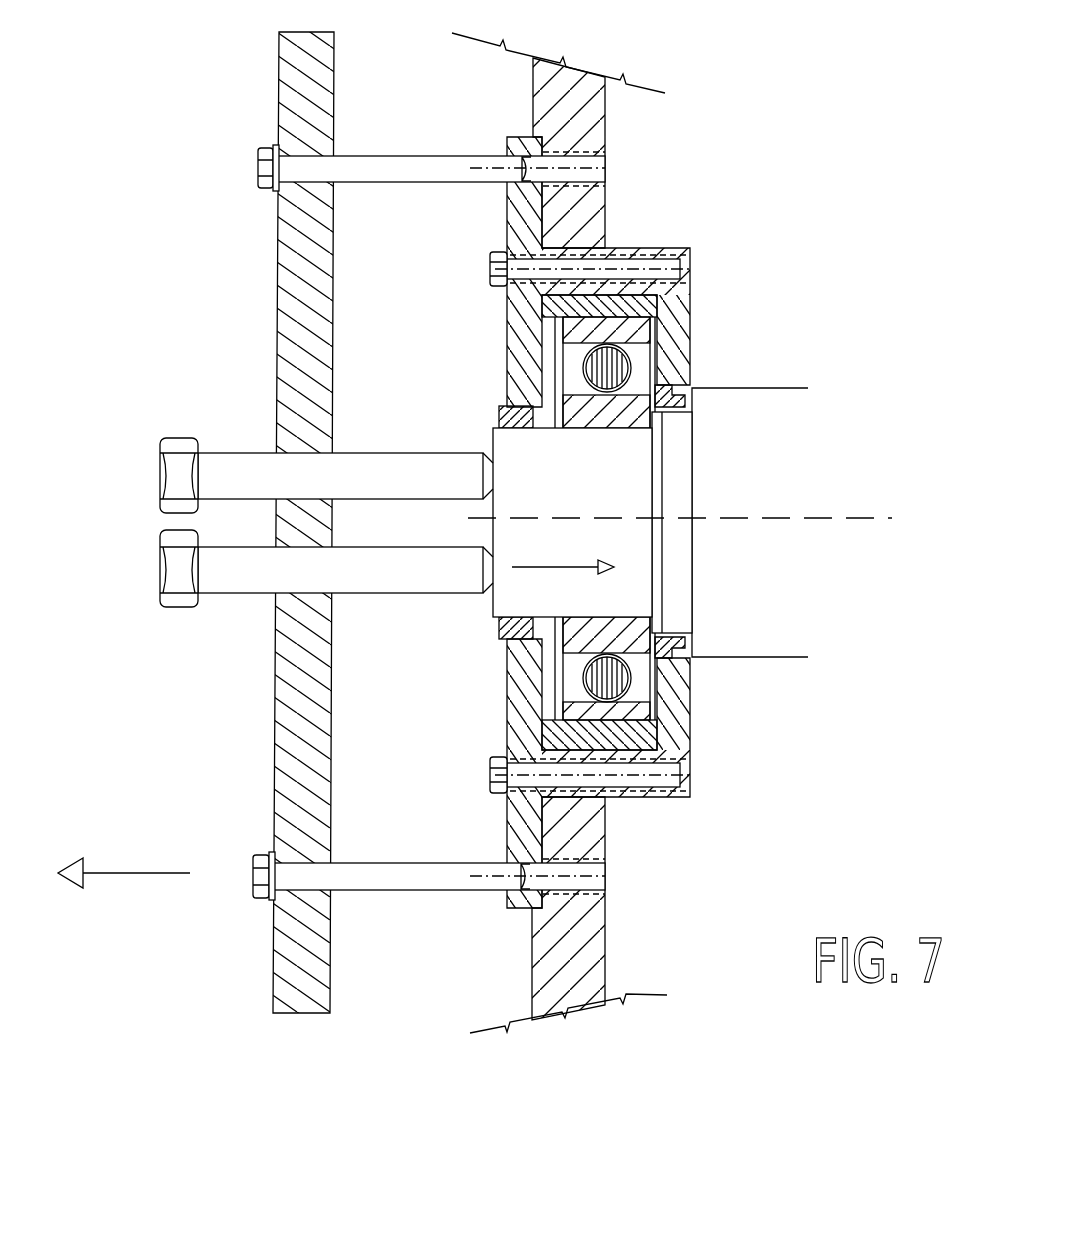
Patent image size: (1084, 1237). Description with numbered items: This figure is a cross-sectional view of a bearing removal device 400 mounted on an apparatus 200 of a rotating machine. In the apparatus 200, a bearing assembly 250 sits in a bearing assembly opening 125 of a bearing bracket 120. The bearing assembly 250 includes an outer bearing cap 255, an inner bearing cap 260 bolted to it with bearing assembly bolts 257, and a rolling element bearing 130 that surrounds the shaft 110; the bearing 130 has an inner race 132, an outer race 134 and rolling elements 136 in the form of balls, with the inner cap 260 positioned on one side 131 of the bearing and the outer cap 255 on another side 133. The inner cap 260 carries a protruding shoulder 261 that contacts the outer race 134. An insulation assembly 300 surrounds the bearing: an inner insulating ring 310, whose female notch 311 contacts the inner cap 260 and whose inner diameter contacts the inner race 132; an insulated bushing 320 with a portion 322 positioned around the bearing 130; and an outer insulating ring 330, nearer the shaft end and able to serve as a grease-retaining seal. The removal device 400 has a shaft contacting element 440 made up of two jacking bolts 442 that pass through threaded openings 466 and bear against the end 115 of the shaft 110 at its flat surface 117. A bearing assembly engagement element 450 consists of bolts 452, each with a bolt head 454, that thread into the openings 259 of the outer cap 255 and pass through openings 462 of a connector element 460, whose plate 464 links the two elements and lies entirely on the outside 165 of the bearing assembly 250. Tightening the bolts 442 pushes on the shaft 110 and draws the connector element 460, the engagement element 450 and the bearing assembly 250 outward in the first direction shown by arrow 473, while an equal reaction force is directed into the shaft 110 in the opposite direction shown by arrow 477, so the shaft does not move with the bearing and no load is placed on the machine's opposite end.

The shaft 110 is at (750, 522).
The end of shaft 115 is at (476, 616).
The flat surface 117 is at (490, 440).
The bearing bracket 120 is at (607, 100).
The bearing assembly opening 125 is at (583, 248).
The bearing 130 is at (728, 508).
The one side of bearing 131 is at (668, 374).
The inner race 132 is at (640, 423).
The another side of bearing 133 is at (546, 350).
The outer race 134 is at (660, 334).
The rolling elements 136 is at (605, 393).
The outside of bearing assembly 165 is at (459, 384).
The apparatus 200 is at (774, 203).
The bearing assembly 250 is at (483, 236).
The outer bearing cap 255 is at (505, 302).
The bearing assembly bolts 257 is at (487, 266).
The openings 259 is at (565, 140).
The inner bearing cap 260 is at (690, 290).
The protruding shoulder 261 is at (690, 322).
The insulation assembly 300 is at (530, 688).
The inner insulating ring 310 is at (678, 648).
The female notch 311 is at (680, 384).
The insulated bushing 320 is at (628, 306).
The portion of insulated bushing 322 is at (618, 757).
The outer insulating ring 330 is at (497, 628).
The bearing removal device 400 is at (194, 100).
The shaft contacting element 440 is at (210, 652).
The bolts 442 is at (398, 494).
The bearing assembly engagement element 450 is at (408, 938).
The bolts 452 is at (368, 155).
The bolt head 454 is at (254, 170).
The connector element 460 is at (244, 754).
The openings in connector element 462 is at (303, 182).
The plate 464 is at (277, 320).
The openings 466 is at (303, 456).
The arrow (first direction) 473 is at (122, 878).
The arrow (second direction) 477 is at (544, 580).